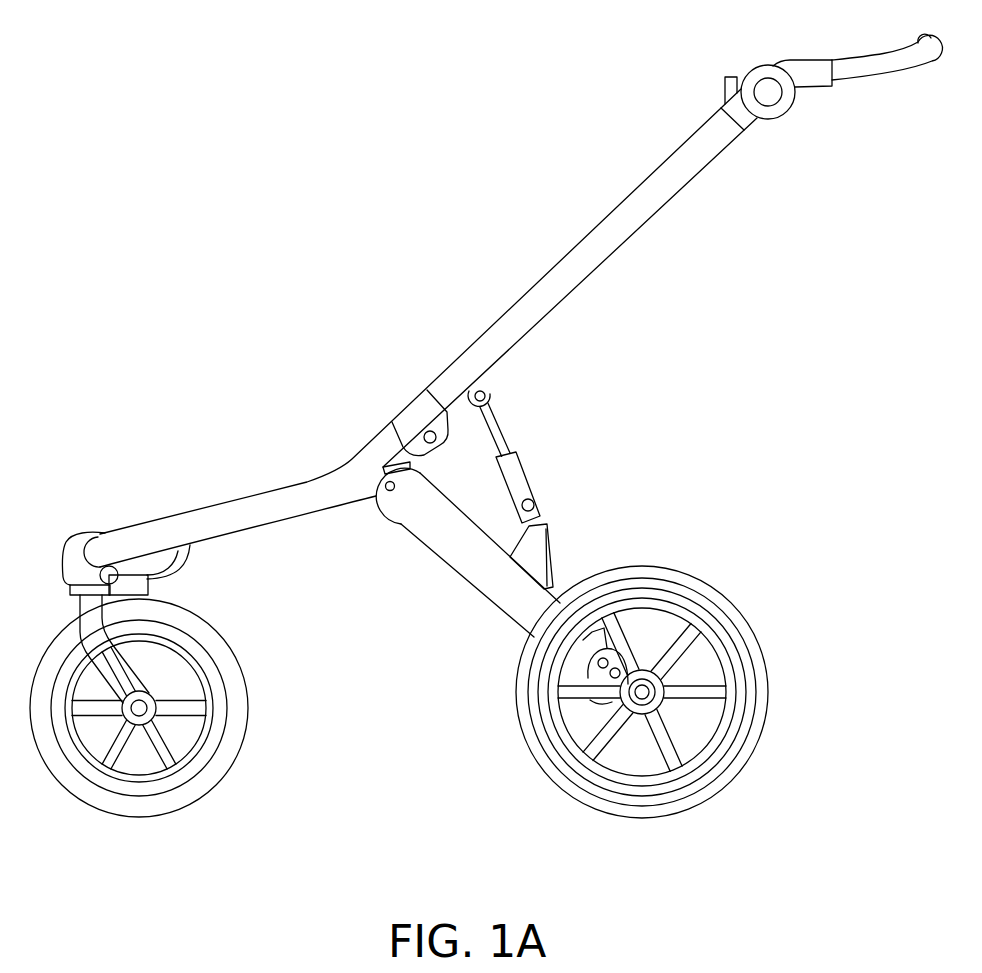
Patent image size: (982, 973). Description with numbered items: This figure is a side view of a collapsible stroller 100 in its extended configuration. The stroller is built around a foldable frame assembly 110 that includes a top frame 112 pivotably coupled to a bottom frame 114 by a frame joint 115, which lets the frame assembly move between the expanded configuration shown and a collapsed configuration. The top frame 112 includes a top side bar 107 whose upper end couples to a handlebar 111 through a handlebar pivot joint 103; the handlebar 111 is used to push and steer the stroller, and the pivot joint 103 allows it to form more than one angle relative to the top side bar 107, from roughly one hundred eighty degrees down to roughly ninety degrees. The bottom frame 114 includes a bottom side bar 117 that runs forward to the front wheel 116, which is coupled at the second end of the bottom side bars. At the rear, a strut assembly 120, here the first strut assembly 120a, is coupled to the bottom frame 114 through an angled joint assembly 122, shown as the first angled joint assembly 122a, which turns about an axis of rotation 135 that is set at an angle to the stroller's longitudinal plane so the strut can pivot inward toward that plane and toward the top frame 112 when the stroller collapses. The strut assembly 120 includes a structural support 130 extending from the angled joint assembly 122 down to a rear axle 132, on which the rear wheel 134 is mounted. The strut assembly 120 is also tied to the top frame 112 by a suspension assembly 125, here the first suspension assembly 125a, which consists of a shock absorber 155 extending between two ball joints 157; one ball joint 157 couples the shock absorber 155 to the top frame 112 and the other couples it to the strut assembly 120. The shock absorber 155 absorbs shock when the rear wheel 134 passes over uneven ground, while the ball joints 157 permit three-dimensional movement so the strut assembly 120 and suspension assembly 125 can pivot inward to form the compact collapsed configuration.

The collapsible stroller 100 is at (258, 168).
The handlebar pivot joint 103 is at (770, 96).
The top side bar 107 is at (677, 161).
The foldable frame assembly 110 is at (301, 392).
The handlebar 111 is at (904, 91).
The top frame 112 is at (684, 216).
The bottom frame 114 is at (202, 493).
The frame joint 115 is at (448, 445).
The front wheel 116 is at (122, 818).
The bottom side bar 117 is at (282, 501).
The strut assembly 120 is at (456, 610).
The first strut assembly 120a is at (567, 564).
The angled joint assembly 122 is at (370, 516).
The first angled joint assembly 122a is at (398, 521).
The suspension assembly 125 is at (549, 472).
The first suspension assembly 125a is at (503, 395).
The structural support 130 is at (507, 605).
The rear axle 132 is at (642, 694).
The rear wheel 134 is at (697, 817).
The axis of rotation 135 is at (388, 489).
The shock absorber 155 is at (506, 466).
The ball joint 157 is at (478, 389).